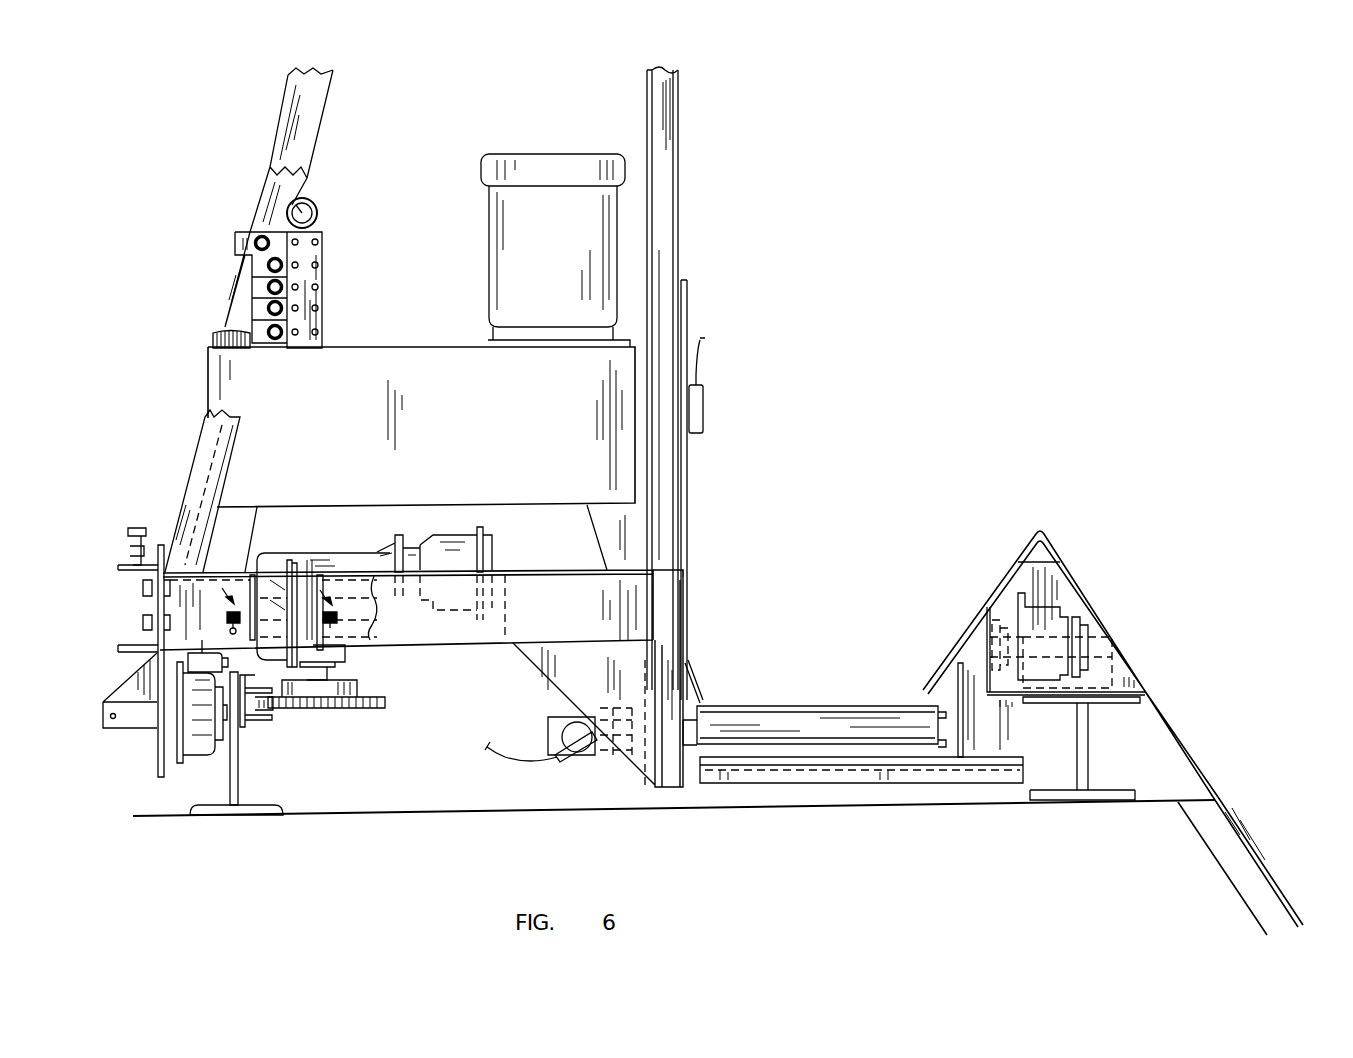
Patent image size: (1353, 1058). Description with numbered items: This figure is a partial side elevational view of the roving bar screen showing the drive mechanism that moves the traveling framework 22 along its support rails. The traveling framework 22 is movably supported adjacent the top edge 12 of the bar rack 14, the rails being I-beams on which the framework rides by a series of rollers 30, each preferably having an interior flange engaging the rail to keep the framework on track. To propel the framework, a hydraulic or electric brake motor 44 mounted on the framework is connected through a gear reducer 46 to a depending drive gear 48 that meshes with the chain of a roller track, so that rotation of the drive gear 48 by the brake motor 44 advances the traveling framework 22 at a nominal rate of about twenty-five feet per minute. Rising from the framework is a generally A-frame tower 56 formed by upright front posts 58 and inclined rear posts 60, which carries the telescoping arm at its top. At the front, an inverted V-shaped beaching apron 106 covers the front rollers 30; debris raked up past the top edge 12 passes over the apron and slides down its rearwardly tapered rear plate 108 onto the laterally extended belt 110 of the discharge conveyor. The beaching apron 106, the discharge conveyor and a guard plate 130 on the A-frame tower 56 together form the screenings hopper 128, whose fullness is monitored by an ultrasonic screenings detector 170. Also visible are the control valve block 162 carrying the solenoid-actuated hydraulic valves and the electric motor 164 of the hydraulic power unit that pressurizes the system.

The top edge 12 is at (1180, 806).
The bar rack 14 is at (1250, 856).
The traveling framework 22 is at (240, 201).
The rollers 30 is at (205, 748).
The brake motor 44 is at (490, 550).
The gear reducer 46 is at (345, 555).
The drive gear 48 is at (330, 705).
The A-frame tower 56 is at (683, 250).
The front posts 58 is at (660, 172).
The rear posts 60 is at (310, 110).
The beaching apron 106 is at (1168, 712).
The rear plate 108 is at (955, 650).
The belt 110 is at (790, 706).
The screenings hopper 128 is at (855, 647).
The guard plate 130 is at (690, 466).
The control valve block 162 is at (258, 290).
The electric motor 164 is at (530, 236).
The ultrasonic screenings detector 170 is at (705, 410).